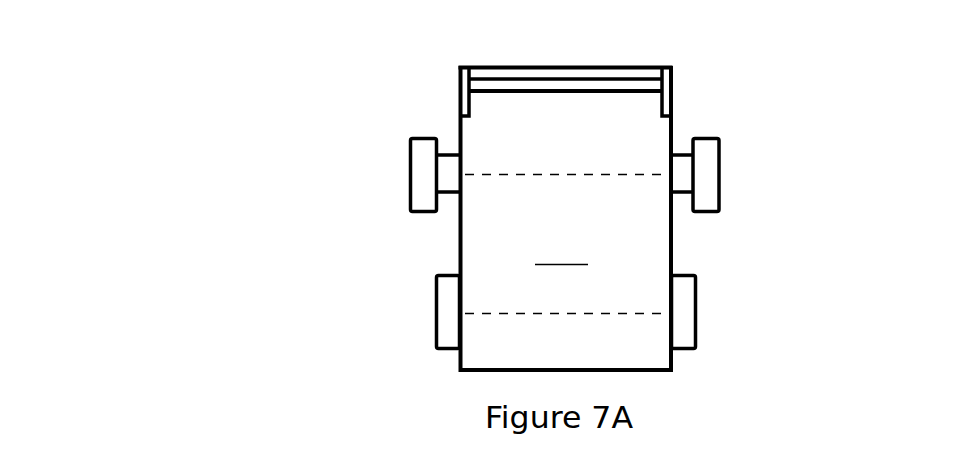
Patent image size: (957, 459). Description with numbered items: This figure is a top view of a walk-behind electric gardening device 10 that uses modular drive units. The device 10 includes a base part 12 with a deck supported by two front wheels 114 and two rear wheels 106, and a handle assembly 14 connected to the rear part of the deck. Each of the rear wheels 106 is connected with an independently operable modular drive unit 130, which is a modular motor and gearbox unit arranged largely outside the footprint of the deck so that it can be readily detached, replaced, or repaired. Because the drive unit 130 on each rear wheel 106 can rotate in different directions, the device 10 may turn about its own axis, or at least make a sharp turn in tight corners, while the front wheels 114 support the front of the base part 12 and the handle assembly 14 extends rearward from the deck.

The walk-behind electric gardening device 10 is at (565, 198).
The base part 12 is at (443, 117).
The handle assembly 14 is at (458, 59).
The rear wheel 106 is at (418, 174).
The modular drive unit 130 is at (449, 194).
The front wheel 114 is at (441, 317).